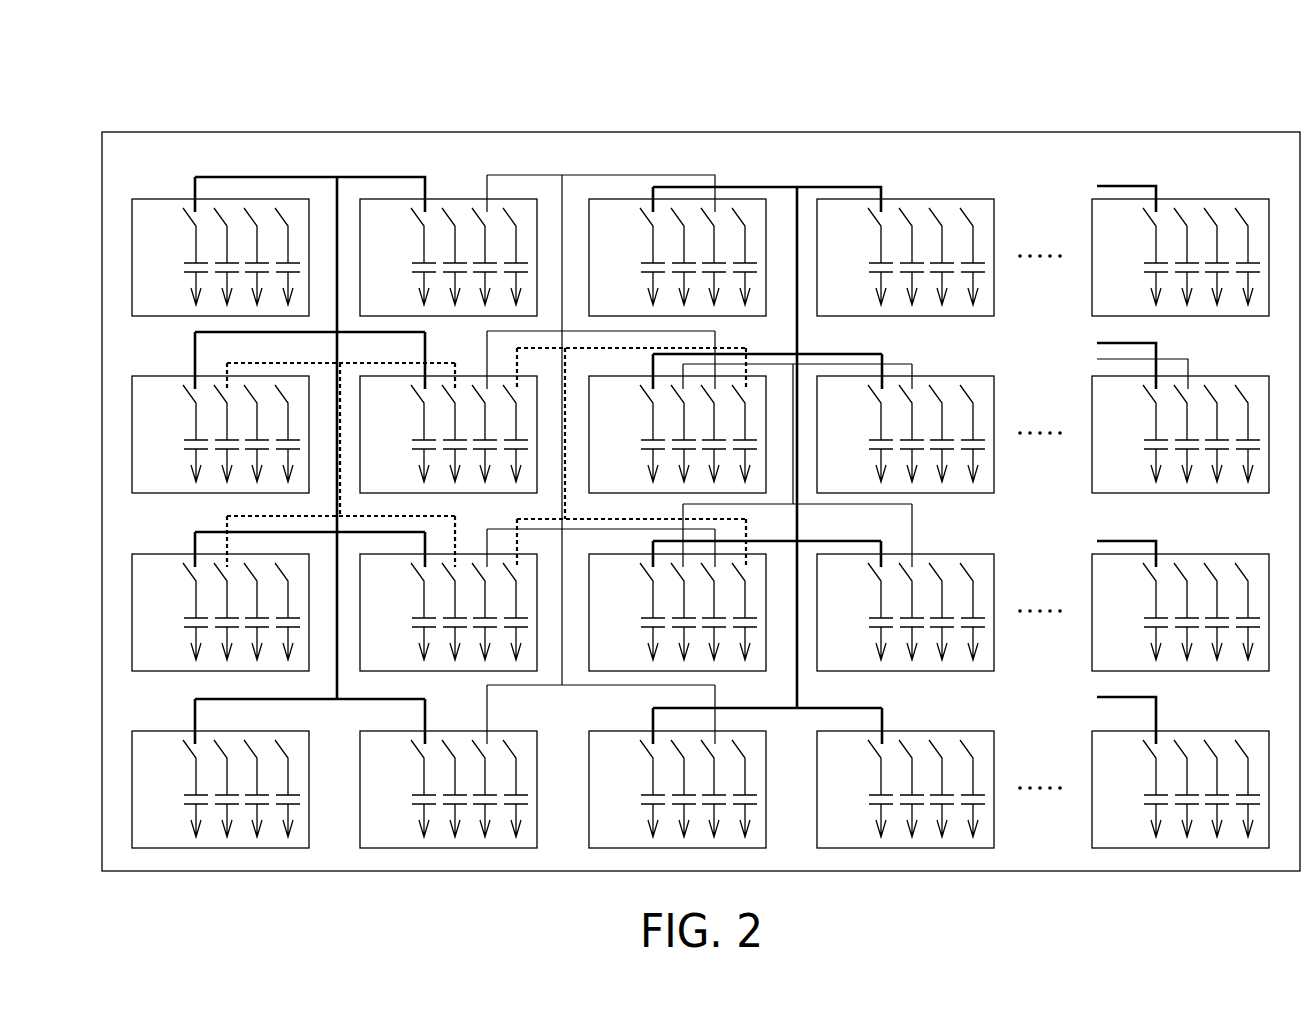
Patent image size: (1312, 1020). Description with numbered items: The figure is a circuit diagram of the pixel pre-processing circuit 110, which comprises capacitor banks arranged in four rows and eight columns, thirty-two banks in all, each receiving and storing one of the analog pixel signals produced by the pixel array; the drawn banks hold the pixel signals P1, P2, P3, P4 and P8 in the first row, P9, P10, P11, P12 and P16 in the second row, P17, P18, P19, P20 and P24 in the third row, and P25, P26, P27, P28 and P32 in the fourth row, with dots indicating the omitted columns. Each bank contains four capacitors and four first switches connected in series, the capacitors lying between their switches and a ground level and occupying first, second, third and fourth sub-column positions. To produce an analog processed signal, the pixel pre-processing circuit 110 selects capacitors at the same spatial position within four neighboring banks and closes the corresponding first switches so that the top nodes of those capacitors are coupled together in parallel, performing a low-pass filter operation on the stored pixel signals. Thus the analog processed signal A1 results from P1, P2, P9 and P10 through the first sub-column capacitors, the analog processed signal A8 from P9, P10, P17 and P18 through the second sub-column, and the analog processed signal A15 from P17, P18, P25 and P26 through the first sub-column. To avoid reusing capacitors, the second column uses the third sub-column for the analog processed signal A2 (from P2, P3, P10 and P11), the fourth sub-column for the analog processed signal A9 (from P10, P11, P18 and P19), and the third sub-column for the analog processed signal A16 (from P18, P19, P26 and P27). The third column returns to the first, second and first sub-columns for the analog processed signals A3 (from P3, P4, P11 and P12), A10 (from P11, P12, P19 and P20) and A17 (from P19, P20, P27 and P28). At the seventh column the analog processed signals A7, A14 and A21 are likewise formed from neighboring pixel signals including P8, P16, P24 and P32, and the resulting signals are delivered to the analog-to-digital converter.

The pixel pre-processing circuit 110 is at (1168, 112).
The analog processed signal A1 is at (310, 446).
The analog processed signal A2 is at (601, 443).
The analog processed signal A3 is at (767, 449).
The analog processed signal A7 is at (1126, 183).
The analog processed signal A8 is at (341, 425).
The analog processed signal A9 is at (631, 420).
The analog processed signal A10 is at (796, 361).
The analog processed signal A14 is at (1157, 359).
The analog processed signal A15 is at (311, 534).
The analog processed signal A16 is at (607, 533).
The analog processed signal A17 is at (767, 538).
The analog processed signal A21 is at (1133, 538).
The analog pixel signal P1 is at (220, 257).
The analog pixel signal P2 is at (448, 257).
The analog pixel signal P3 is at (677, 257).
The analog pixel signal P4 is at (905, 257).
The analog pixel signal P8 is at (1180, 257).
The analog pixel signal P9 is at (220, 434).
The analog pixel signal P10 is at (448, 434).
The analog pixel signal P11 is at (677, 434).
The analog pixel signal P12 is at (905, 434).
The analog pixel signal P16 is at (1180, 434).
The analog pixel signal P17 is at (220, 612).
The analog pixel signal P18 is at (448, 612).
The analog pixel signal P19 is at (677, 612).
The analog pixel signal P20 is at (905, 612).
The analog pixel signal P24 is at (1180, 612).
The analog pixel signal P25 is at (220, 789).
The analog pixel signal P26 is at (448, 789).
The analog pixel signal P27 is at (677, 789).
The analog pixel signal P28 is at (905, 789).
The analog pixel signal P32 is at (1180, 789).